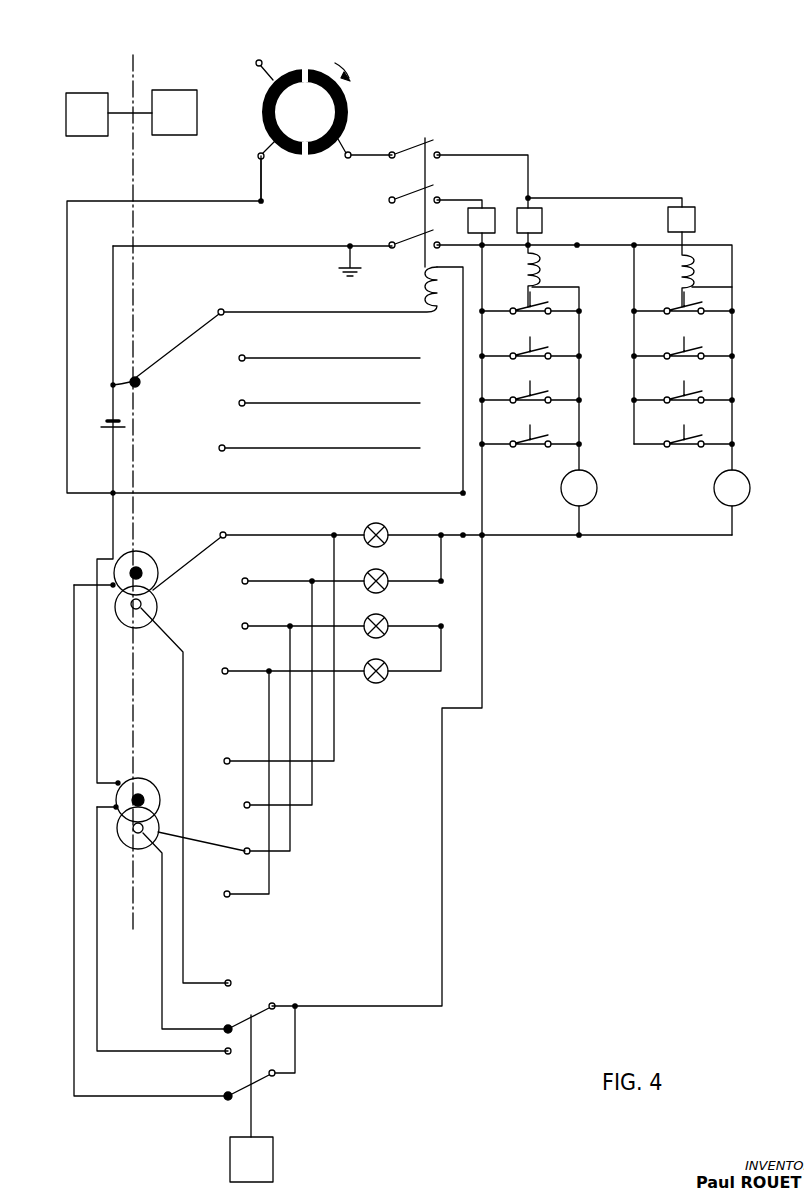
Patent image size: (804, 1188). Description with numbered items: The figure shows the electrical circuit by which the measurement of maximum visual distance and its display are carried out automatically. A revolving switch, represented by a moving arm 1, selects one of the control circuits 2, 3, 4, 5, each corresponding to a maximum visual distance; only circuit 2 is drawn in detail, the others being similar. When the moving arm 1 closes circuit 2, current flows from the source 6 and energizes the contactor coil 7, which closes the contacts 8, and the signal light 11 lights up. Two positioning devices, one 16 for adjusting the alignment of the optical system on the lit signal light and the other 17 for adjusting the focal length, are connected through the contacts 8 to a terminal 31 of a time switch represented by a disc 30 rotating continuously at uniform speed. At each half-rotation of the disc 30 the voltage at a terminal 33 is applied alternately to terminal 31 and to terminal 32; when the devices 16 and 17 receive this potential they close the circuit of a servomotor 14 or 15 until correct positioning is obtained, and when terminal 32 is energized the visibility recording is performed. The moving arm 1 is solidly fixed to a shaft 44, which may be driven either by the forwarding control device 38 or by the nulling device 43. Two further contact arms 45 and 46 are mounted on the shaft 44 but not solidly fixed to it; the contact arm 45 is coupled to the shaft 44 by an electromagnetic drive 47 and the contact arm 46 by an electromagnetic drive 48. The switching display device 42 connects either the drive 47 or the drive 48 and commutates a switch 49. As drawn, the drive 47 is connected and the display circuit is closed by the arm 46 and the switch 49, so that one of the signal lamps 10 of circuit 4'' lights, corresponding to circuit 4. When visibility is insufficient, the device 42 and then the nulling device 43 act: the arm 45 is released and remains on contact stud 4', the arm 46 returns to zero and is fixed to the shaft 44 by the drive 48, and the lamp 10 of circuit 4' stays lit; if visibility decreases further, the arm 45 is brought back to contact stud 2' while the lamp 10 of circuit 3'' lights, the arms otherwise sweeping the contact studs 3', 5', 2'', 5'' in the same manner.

The moving arm 1 is at (175, 349).
The circuit 2 is at (230, 298).
The circuit 3 is at (329, 345).
The circuit 4 is at (329, 390).
The circuit 5 is at (319, 435).
The source 6 is at (107, 420).
The contactor coil 7 is at (418, 291).
The contacts 8 is at (416, 149).
The signal lamps 10 is at (386, 545).
The signal light 11 is at (468, 228).
The servomotor 14 is at (568, 499).
The servomotor 15 is at (610, 542).
The positioning device 16 is at (542, 227).
The positioning device 17 is at (583, 185).
The disc 30 is at (348, 110).
The terminal 31 is at (358, 162).
The terminal 32 is at (273, 60).
The terminal 33 is at (252, 171).
The forwarding control device 38 is at (98, 92).
The switching display device 42 is at (273, 1160).
The nulling device 43 is at (190, 90).
The shaft 44 is at (130, 188).
The contact arm 45 is at (204, 556).
The contact arm 46 is at (213, 847).
The electromagnetic drive 47 is at (152, 565).
The electromagnetic drive 48 is at (154, 785).
The switch 49 is at (267, 1006).
The contact stud 2' is at (234, 524).
The contact stud 3' is at (255, 567).
The contact stud 4' is at (255, 613).
The contact stud 5' is at (236, 658).
The contact stud 2'' is at (238, 749).
The contact stud 3'' is at (257, 794).
The contact stud 4'' is at (257, 839).
The contact stud 5'' is at (239, 882).